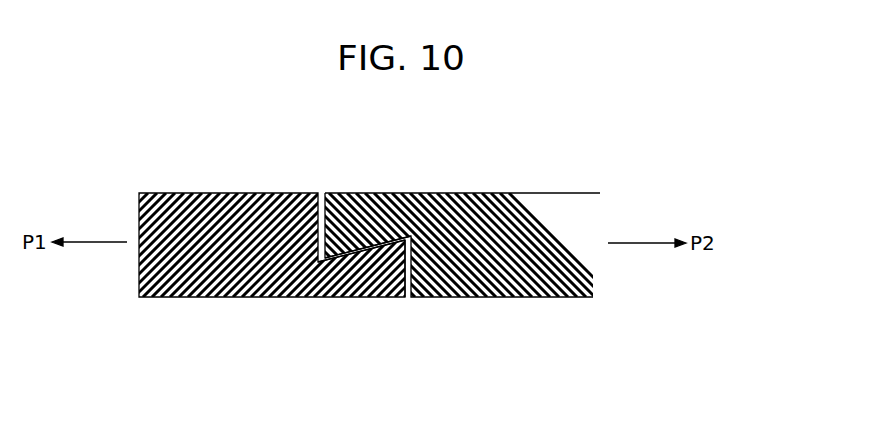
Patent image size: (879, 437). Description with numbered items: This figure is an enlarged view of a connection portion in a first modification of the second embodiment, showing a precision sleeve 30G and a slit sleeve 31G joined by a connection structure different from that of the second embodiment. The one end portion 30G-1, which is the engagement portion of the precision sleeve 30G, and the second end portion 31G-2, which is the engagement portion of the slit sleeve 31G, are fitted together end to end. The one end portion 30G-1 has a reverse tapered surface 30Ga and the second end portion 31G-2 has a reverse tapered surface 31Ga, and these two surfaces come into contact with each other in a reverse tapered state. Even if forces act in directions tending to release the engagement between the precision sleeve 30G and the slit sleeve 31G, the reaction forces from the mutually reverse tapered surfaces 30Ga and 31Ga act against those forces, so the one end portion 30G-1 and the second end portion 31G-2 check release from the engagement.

The slit sleeve 31G is at (187, 182).
The precision sleeve 30G is at (523, 178).
The reverse tapered surface 30Ga is at (358, 248).
The one end portion 30G-1 is at (379, 243).
The reverse tapered surface 31Ga is at (367, 262).
The second end portion 31G-2 is at (390, 278).